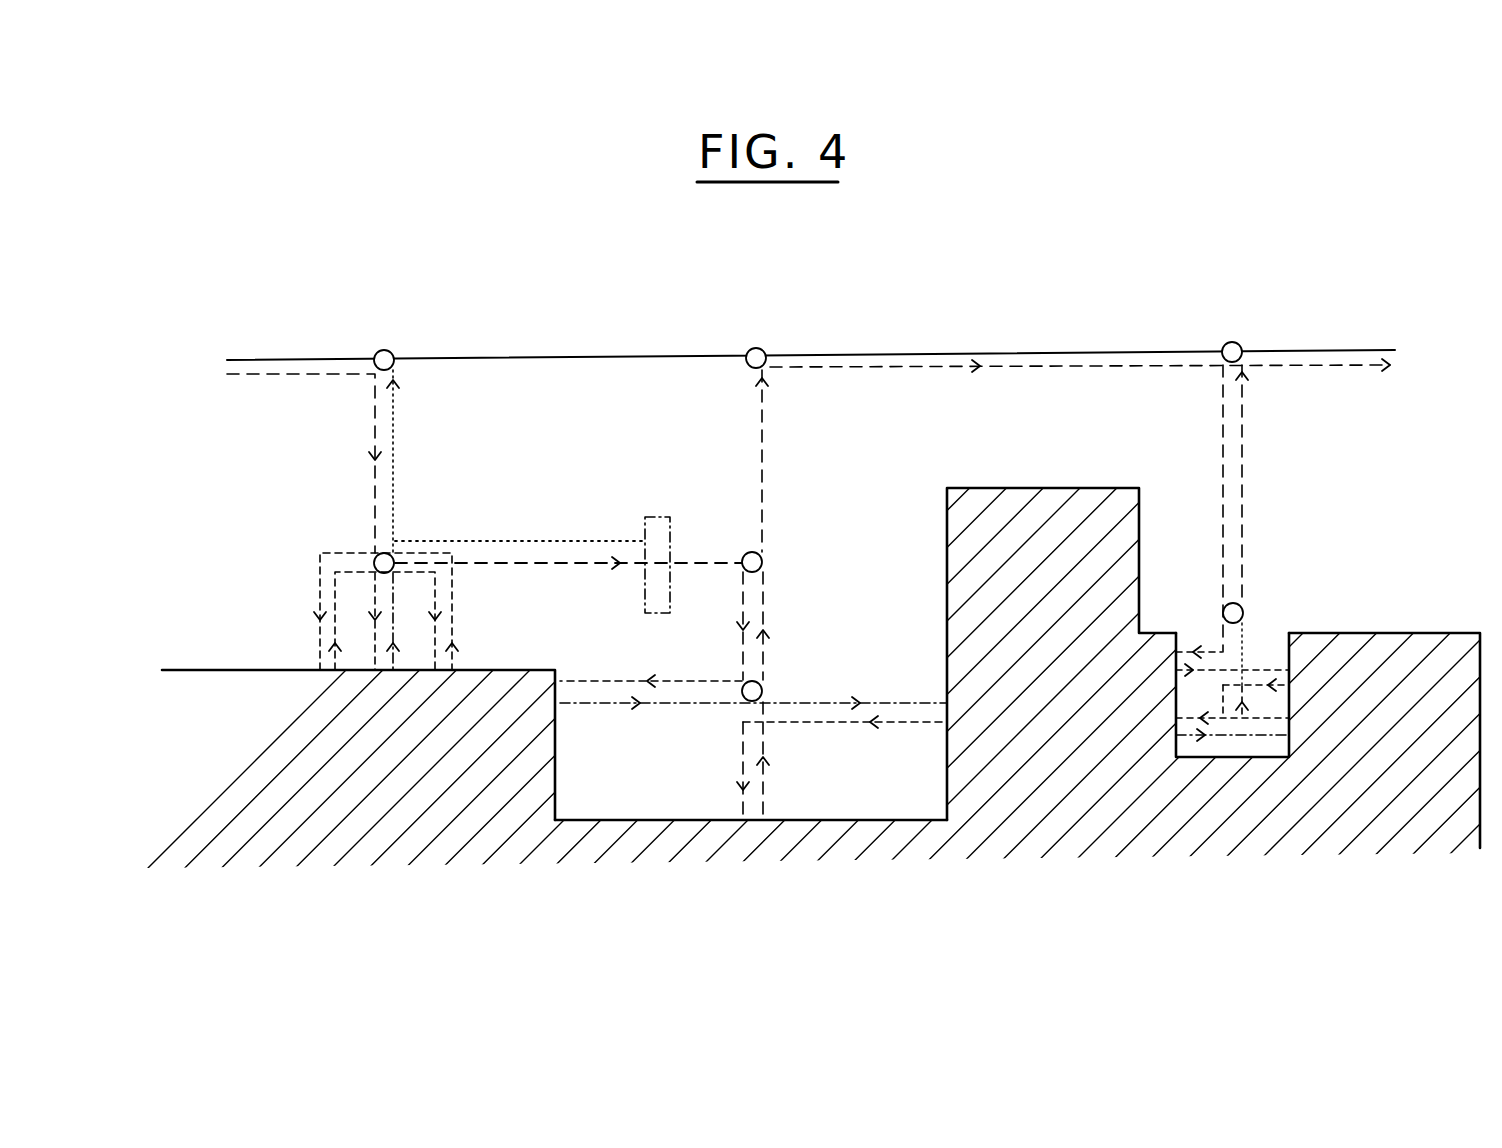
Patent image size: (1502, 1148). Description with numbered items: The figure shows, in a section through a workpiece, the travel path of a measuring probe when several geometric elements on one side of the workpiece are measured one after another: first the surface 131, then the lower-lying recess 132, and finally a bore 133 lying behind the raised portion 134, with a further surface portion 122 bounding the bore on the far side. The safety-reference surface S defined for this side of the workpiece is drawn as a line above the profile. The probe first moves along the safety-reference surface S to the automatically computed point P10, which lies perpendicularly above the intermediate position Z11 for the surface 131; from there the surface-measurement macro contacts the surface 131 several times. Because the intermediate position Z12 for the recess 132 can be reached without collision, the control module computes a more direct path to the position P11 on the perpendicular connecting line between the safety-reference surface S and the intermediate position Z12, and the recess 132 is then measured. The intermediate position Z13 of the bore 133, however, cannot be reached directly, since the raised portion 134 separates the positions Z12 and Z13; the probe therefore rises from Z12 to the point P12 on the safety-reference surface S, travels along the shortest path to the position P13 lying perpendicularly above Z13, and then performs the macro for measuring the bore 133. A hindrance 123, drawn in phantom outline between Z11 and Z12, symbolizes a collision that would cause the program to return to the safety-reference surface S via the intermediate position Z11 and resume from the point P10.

The safety-reference surface S is at (1003, 350).
The automatically-computed point P10 is at (384, 350).
The position P11 is at (745, 553).
The point P12 is at (757, 348).
The position P13 is at (1233, 341).
The intermediate position Z11 is at (390, 553).
The intermediate position Z12 is at (763, 688).
The intermediate position Z13 is at (1243, 613).
The hindrance 123 is at (655, 515).
The workpiece surface portion 122 is at (1412, 645).
The surface 131 is at (247, 670).
The lower-lying recess 132 is at (573, 770).
The bore 133 is at (1272, 645).
The raised portion 134 is at (1082, 490).